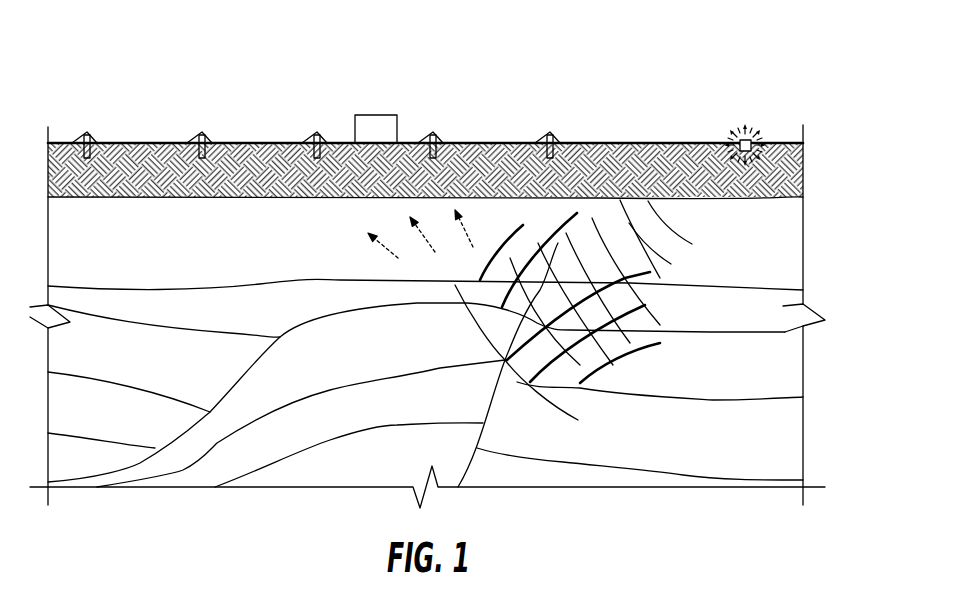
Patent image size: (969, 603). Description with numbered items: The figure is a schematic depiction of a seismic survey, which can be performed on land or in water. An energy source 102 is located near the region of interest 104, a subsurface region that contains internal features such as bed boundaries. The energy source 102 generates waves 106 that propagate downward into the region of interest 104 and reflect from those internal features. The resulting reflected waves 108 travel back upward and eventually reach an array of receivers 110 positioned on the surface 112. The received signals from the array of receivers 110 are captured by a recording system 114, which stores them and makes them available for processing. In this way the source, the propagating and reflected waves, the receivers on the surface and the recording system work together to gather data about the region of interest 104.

The energy source 102 is at (745, 138).
The region of interest 104 is at (827, 157).
The waves 106 is at (676, 203).
The reflected waves 108 is at (383, 249).
The array of receivers 110 is at (202, 133).
The surface 112 is at (63, 142).
The recording system 114 is at (376, 115).